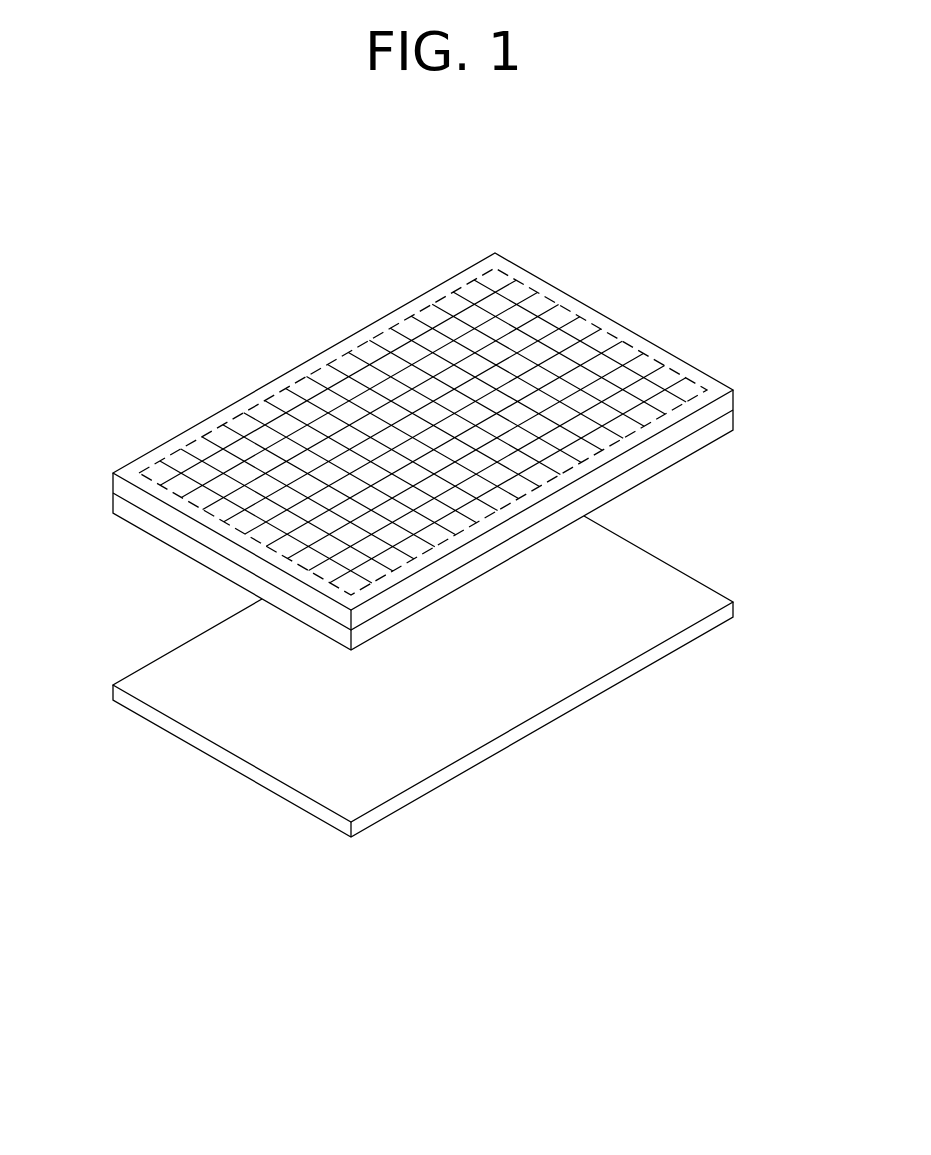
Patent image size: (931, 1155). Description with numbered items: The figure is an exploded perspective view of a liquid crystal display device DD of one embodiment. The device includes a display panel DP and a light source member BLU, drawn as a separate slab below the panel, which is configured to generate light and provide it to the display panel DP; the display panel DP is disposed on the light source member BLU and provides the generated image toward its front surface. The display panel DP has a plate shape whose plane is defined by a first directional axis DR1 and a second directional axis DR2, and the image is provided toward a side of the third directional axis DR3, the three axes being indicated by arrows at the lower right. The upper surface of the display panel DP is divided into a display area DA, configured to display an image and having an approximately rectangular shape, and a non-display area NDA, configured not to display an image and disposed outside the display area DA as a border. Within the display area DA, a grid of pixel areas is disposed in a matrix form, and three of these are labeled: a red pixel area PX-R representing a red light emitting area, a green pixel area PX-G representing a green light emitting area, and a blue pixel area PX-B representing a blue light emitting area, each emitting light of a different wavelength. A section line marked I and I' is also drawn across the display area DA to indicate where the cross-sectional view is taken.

The liquid crystal display device DD is at (619, 247).
The display panel DP is at (739, 403).
The non-display area NDA is at (633, 341).
The display area DA is at (647, 355).
The red pixel area PX-R is at (193, 498).
The green pixel area PX-G is at (212, 515).
The blue pixel area PX-B is at (230, 532).
The light source member BLU is at (741, 610).
The section line start I is at (431, 420).
The section line end I' is at (530, 479).
The first directional axis DR1 is at (648, 878).
The second directional axis DR2 is at (648, 878).
The third directional axis DR3 is at (648, 878).